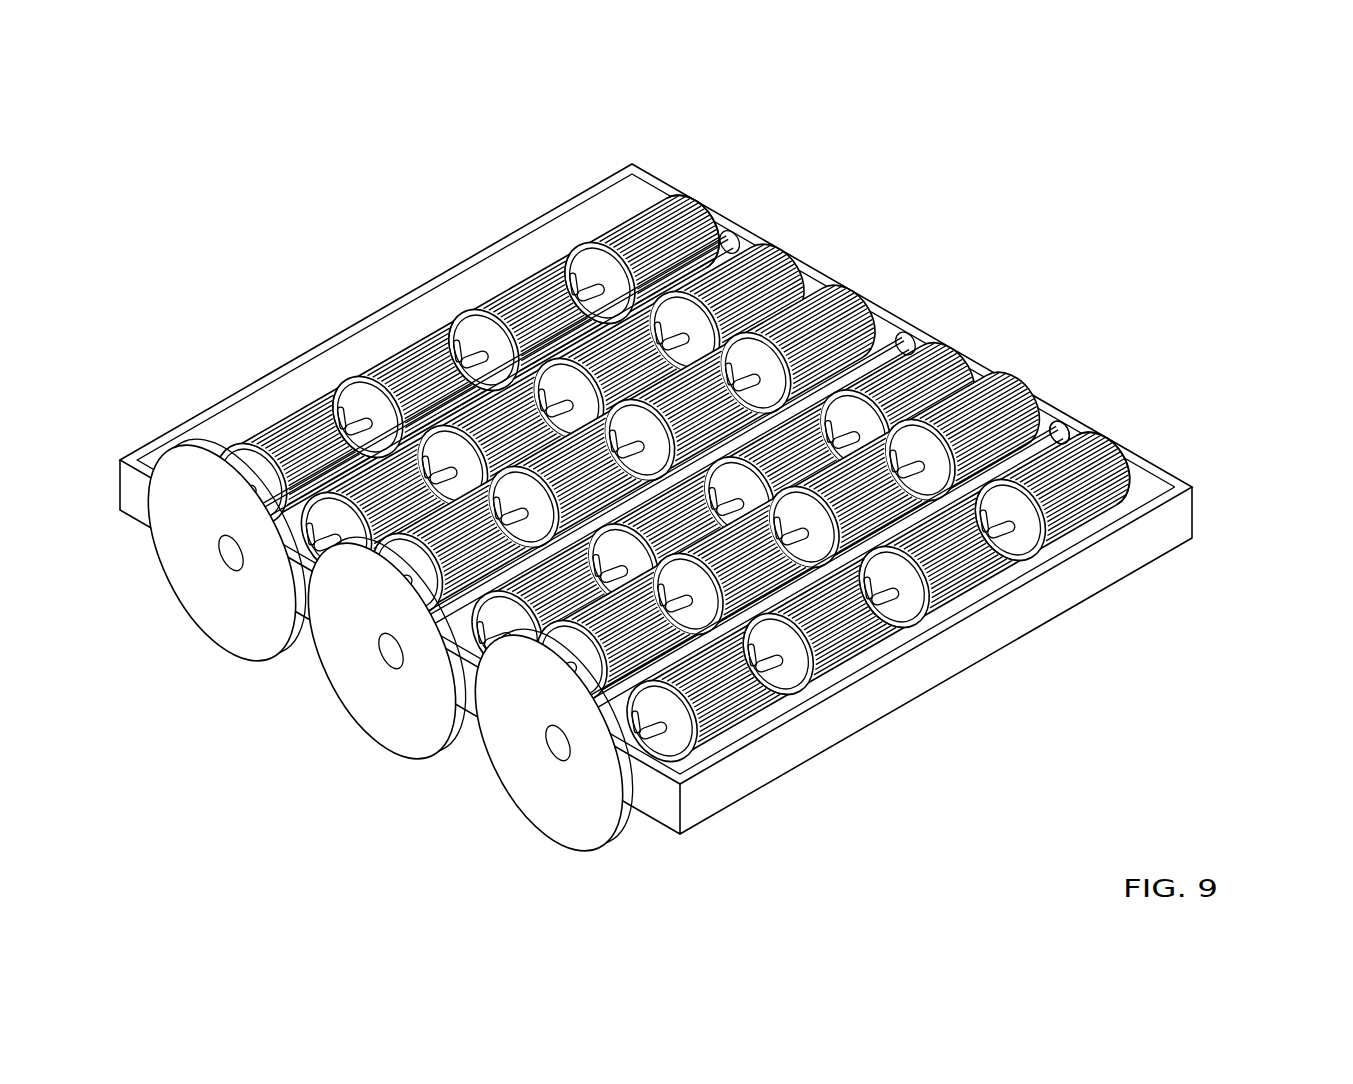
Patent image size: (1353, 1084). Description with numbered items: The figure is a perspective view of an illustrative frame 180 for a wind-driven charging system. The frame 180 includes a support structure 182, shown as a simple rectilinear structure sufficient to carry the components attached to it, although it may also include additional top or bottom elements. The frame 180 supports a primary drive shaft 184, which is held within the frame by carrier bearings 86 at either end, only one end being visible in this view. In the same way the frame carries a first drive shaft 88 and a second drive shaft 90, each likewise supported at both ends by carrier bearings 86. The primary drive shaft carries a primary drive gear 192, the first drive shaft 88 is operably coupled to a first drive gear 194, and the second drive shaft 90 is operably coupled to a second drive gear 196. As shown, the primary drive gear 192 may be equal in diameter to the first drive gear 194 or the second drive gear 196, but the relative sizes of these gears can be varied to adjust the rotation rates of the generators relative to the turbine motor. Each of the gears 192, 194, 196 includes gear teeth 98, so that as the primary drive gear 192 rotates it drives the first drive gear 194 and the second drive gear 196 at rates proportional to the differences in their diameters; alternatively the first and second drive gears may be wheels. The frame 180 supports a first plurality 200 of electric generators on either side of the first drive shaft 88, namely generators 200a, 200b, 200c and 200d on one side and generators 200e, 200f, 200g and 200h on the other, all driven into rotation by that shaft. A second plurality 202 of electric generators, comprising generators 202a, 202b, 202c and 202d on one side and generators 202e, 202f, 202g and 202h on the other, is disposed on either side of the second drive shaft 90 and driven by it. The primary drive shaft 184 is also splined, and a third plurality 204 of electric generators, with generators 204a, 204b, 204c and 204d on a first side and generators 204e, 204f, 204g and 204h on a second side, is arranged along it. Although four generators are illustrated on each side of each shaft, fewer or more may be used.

The frame 180 is at (708, 503).
The support structure 182 is at (1182, 510).
The primary drive shaft 184 is at (960, 385).
The carrier bearings 86 is at (752, 252).
The first drive shaft 88 is at (793, 290).
The second drive shaft 90 is at (1120, 477).
The first plurality of electric generators 200 is at (747, 212).
The third plurality of electric generators 204 is at (907, 312).
The second plurality of electric generators 202 is at (1070, 405).
The electric generator 200a is at (262, 452).
The electric generator 200b is at (400, 398).
The electric generator 200c is at (516, 331).
The electric generator 200d is at (632, 264).
The electric generator 200e is at (250, 441).
The electric generator 200f is at (362, 395).
The electric generator 200g is at (478, 328).
The electric generator 200h is at (594, 261).
The electric generator 204a is at (335, 405).
The electric generator 204b is at (452, 337).
The electric generator 204c is at (568, 270).
The electric generator 204d is at (690, 200).
The electric generator 204e is at (748, 668).
The electric generator 204f is at (866, 600).
The electric generator 204g is at (982, 533).
The electric generator 204h is at (1105, 470).
The electric generator 202a is at (705, 735).
The electric generator 202b is at (820, 665).
The electric generator 202c is at (935, 598).
The electric generator 202d is at (1052, 531).
The electric generator 202e is at (672, 705).
The electric generator 202f is at (790, 640).
The electric generator 202g is at (905, 573).
The electric generator 202h is at (1020, 505).
The first drive gear 194 is at (228, 634).
The primary drive gear 192 is at (390, 733).
The second drive gear 196 is at (555, 826).
The gear teeth 98 is at (306, 577).